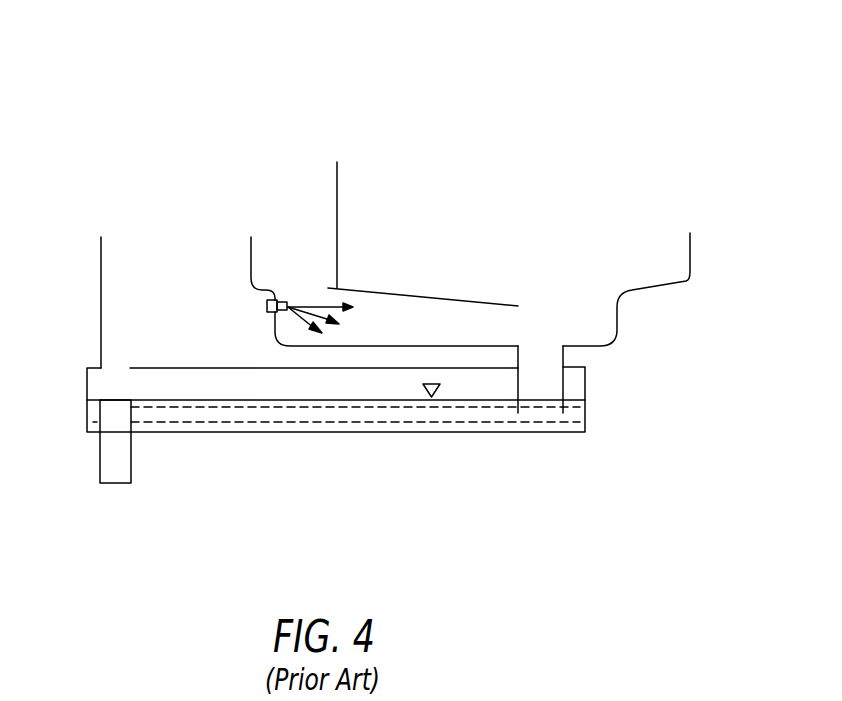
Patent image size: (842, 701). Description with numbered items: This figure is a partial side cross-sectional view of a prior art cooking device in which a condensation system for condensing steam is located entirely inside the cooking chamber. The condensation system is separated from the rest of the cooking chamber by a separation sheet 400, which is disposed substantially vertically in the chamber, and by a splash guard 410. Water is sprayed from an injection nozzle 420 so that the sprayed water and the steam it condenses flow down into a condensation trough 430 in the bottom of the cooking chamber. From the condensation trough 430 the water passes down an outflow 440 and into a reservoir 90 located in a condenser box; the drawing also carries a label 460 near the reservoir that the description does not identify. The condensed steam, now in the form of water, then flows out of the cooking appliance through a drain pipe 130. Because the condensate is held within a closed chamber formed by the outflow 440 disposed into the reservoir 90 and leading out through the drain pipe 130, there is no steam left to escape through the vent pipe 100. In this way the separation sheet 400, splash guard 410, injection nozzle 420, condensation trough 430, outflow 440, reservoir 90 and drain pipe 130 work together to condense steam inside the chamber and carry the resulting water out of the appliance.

The reservoir 90 is at (537, 423).
The vent pipe 100 is at (118, 320).
The drain pipe 130 is at (115, 440).
The separation sheet 400 is at (337, 213).
The splash guard 410 is at (433, 300).
The injection nozzle 420 is at (301, 217).
The condensation trough 430 is at (251, 253).
The outflow 440 is at (567, 355).
The fluid level 460 is at (497, 383).